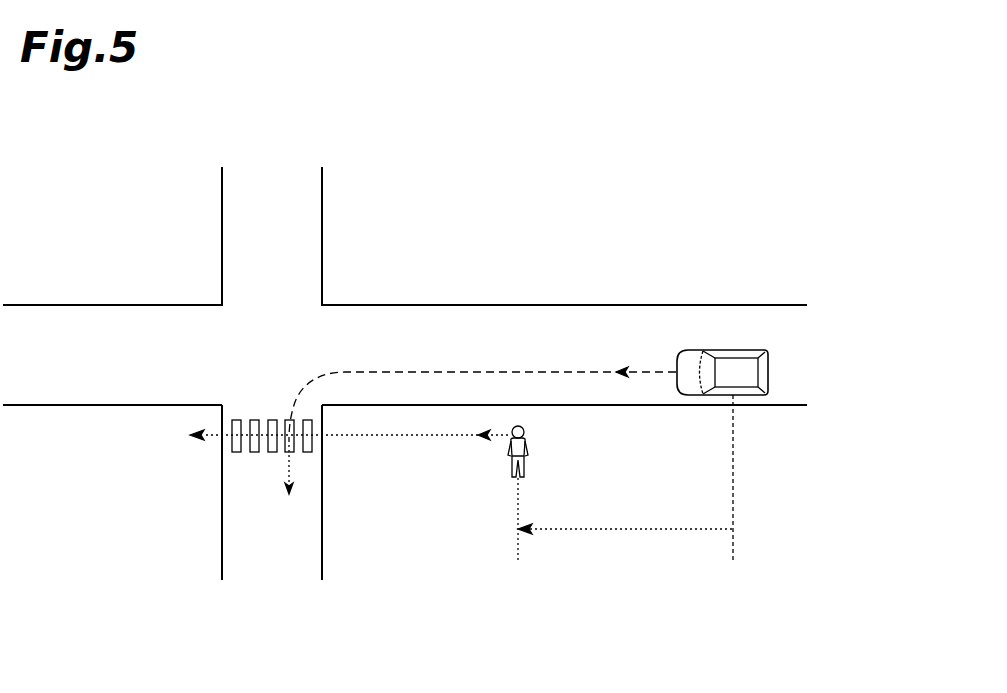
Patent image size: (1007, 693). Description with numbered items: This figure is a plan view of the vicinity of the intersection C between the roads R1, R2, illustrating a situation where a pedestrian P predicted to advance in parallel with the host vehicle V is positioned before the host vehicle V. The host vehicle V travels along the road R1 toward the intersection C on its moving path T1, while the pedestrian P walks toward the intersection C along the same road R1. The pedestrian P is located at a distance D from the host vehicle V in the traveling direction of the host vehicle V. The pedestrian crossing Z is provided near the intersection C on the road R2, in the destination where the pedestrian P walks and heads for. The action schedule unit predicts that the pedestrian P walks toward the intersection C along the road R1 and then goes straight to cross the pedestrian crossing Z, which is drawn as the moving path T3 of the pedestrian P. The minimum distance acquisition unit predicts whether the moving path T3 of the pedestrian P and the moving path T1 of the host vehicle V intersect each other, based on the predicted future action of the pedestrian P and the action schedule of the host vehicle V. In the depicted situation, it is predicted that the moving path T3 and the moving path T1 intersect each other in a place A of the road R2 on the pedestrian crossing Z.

The road R1 is at (800, 360).
The road R2 is at (271, 581).
The intersection C is at (282, 326).
The pedestrian crossing Z is at (235, 456).
The place A is at (287, 440).
The moving path T1 is at (486, 368).
The host vehicle V is at (731, 349).
The pedestrian P is at (530, 446).
The moving path T3 is at (368, 438).
The distance D is at (625, 543).